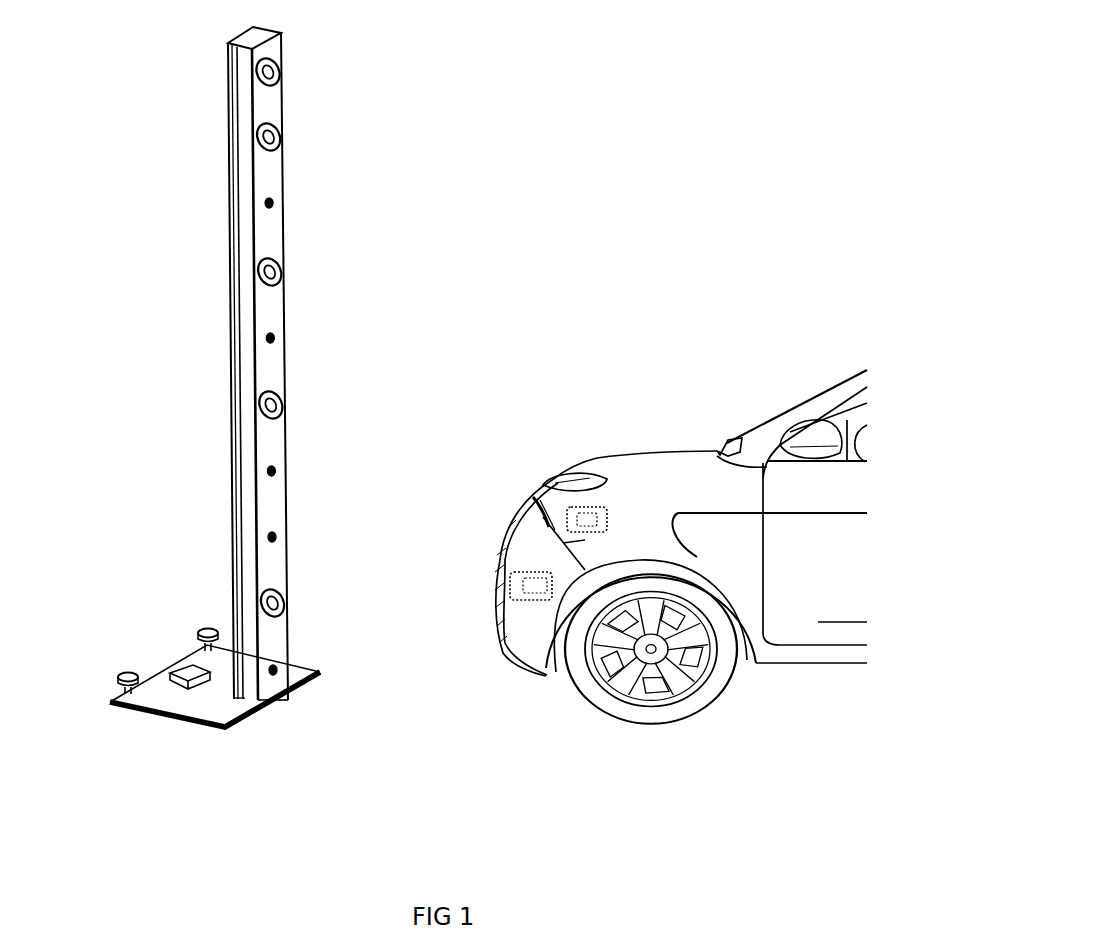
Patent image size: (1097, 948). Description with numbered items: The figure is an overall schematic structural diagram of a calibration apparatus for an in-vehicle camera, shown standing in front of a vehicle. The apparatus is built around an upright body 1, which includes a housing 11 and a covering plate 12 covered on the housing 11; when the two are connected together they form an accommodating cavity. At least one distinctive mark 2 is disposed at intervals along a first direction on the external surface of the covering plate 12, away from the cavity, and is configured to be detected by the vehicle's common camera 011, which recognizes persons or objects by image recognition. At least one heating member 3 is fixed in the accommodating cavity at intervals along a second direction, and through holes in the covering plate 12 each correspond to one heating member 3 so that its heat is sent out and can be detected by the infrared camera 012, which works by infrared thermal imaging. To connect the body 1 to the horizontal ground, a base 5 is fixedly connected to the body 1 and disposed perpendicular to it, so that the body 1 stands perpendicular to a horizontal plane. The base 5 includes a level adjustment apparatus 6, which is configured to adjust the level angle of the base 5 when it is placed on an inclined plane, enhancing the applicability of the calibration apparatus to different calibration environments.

The body 1 is at (229, 356).
The housing 11 is at (243, 288).
The covering plate 12 is at (335, 344).
The distinctive mark 2 is at (283, 73).
The heating member 3 is at (247, 337).
The base 5 is at (165, 683).
The level adjustment apparatus 6 is at (124, 674).
The common camera 011 is at (587, 507).
The infrared camera 012 is at (505, 522).